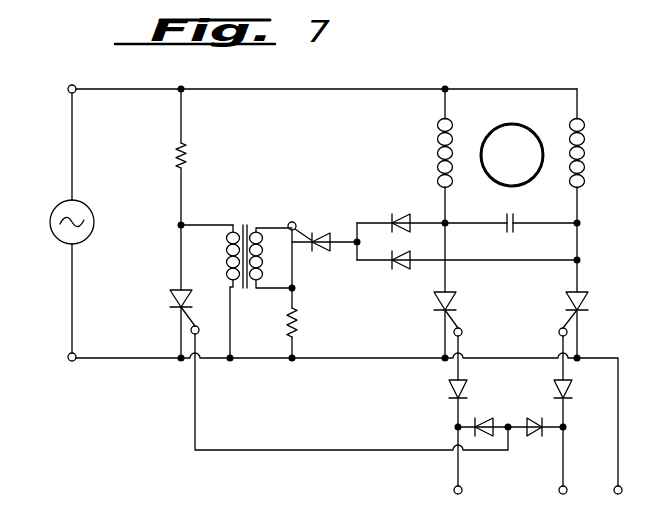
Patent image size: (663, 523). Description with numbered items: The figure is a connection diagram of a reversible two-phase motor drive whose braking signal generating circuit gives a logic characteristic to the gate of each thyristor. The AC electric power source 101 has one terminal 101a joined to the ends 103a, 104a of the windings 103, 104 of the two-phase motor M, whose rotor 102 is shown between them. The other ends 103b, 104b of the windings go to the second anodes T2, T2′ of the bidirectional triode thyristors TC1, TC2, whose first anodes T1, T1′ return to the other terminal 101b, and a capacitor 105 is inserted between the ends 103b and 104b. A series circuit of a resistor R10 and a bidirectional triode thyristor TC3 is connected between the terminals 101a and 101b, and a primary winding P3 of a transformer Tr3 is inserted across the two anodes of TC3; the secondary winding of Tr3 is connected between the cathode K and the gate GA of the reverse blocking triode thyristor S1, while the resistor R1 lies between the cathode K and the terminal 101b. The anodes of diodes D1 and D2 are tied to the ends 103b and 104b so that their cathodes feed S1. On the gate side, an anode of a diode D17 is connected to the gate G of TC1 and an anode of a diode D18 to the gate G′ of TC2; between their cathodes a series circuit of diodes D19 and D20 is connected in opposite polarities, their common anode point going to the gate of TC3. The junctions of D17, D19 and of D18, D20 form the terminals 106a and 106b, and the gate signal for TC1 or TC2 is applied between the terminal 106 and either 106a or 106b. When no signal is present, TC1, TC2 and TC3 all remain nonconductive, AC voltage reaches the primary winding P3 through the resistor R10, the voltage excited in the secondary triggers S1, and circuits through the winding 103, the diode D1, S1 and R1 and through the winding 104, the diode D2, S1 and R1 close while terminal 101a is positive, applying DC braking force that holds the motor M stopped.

The AC electric power source 101 is at (50, 222).
The terminal of the power source 101a is at (68, 90).
The terminal of the power source 101b is at (68, 356).
The rotor 102 is at (498, 129).
The winding 103 is at (437, 154).
The end of the winding 103a is at (445, 85).
The end of the winding 103b is at (446, 225).
The winding 104 is at (585, 152).
The end of the winding 104a is at (580, 80).
The end of the winding 104b is at (550, 244).
The capacitor 105 is at (506, 215).
The terminal 106 is at (618, 494).
The terminal 106a is at (462, 494).
The terminal 106b is at (572, 500).
The resistor R10 is at (160, 156).
The resistor R1 is at (298, 322).
The transformer Tr3 is at (250, 219).
The primary winding P3 is at (227, 246).
The gate GA is at (285, 210).
The reverse blocking triode thyristor S1 is at (320, 233).
The cathode K is at (296, 289).
The bidirectional triode thyristor TC3 is at (171, 291).
The bidirectional triode thyristor TC1 is at (433, 300).
The first anode T1 is at (422, 341).
The second anode T2 is at (458, 281).
The gate G is at (465, 336).
The bidirectional triode thyristor TC2 is at (589, 300).
The first anode T1′ is at (598, 337).
The second anode T2′ is at (575, 290).
The gate G′ is at (554, 334).
The two-phase motor M is at (553, 125).
The diode D1 is at (402, 217).
The diode D2 is at (400, 270).
The diode D17 is at (448, 390).
The diode D18 is at (571, 389).
The diode D19 is at (494, 416).
The diode D20 is at (537, 425).